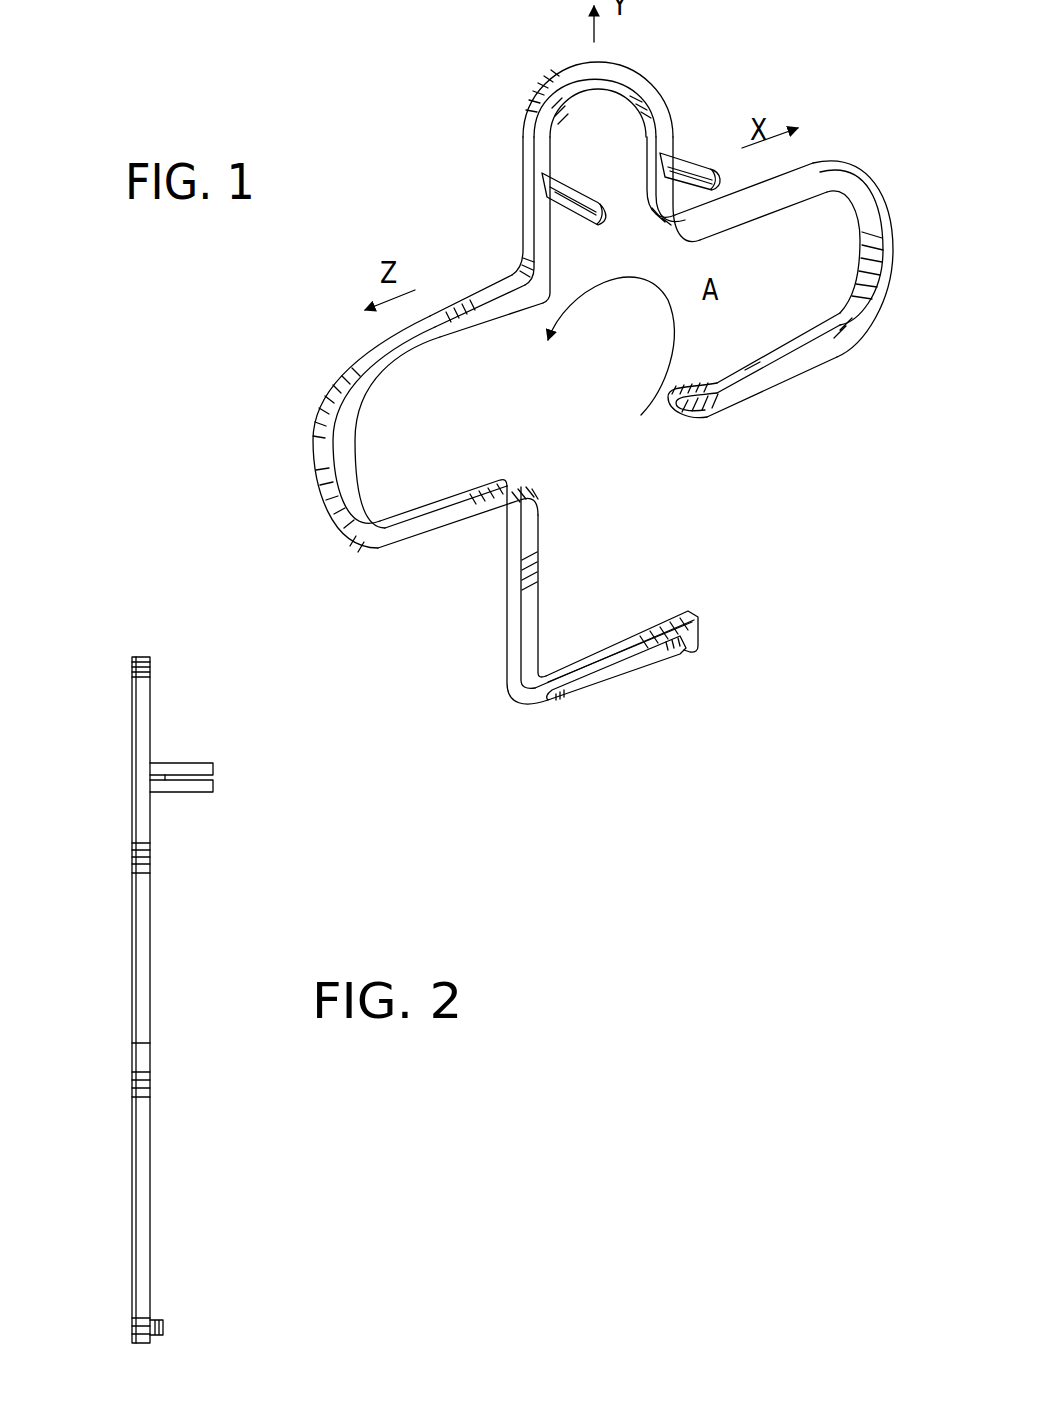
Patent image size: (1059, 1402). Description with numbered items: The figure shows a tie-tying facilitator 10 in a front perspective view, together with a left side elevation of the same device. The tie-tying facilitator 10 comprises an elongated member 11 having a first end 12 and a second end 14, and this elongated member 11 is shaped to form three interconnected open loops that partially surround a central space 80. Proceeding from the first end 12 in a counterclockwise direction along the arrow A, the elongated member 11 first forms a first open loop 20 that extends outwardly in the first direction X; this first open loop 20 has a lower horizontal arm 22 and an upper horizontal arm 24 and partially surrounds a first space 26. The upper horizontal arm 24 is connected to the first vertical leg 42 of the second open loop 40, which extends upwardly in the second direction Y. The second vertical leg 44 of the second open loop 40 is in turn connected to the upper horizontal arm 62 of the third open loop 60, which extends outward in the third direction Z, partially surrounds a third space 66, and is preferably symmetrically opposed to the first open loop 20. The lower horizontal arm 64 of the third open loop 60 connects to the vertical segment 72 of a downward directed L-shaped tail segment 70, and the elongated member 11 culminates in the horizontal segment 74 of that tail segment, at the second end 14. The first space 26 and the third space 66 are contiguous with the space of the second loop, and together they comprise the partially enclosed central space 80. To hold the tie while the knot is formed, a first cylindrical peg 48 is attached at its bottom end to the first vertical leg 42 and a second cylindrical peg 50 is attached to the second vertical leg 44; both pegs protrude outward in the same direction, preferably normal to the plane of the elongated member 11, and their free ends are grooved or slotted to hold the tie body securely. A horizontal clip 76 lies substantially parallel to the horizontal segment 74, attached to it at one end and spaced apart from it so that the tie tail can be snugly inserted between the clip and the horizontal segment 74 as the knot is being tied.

In FIG. 1, the tie-tying facilitator 10 is at (751, 428).
In FIG. 2, the tie-tying facilitator 10 is at (154, 1229).
In FIG. 1, the elongated member 11 is at (750, 360).
In FIG. 1, the first end 12 is at (675, 408).
In FIG. 1, the second end 14 is at (697, 626).
In FIG. 1, the first open loop 20 is at (858, 168).
In FIG. 1, the lower horizontal arm 22 is at (797, 372).
In FIG. 1, the upper horizontal arm 24 is at (762, 203).
In FIG. 1, the first space 26 is at (810, 300).
In FIG. 1, the second open loop 40 is at (526, 112).
In FIG. 2, the second open loop 40 is at (130, 706).
In FIG. 1, the first vertical leg 42 is at (640, 86).
In FIG. 1, the second vertical leg 44 is at (527, 232).
In FIG. 2, the second vertical leg 44 is at (138, 815).
In FIG. 1, the first cylindrical peg 48 is at (688, 163).
In FIG. 1, the second cylindrical peg 50 is at (545, 185).
In FIG. 2, the second cylindrical peg 50 is at (190, 762).
In FIG. 1, the third open loop 60 is at (350, 540).
In FIG. 2, the third open loop 60 is at (138, 1030).
In FIG. 1, the upper horizontal arm 62 is at (440, 336).
In FIG. 1, the lower horizontal arm 64 is at (436, 527).
In FIG. 1, the third space 66 is at (442, 458).
In FIG. 1, the L-shaped tail segment 70 is at (505, 689).
In FIG. 2, the L-shaped tail segment 70 is at (130, 1268).
In FIG. 1, the vertical segment 72 is at (540, 606).
In FIG. 2, the vertical segment 72 is at (140, 1208).
In FIG. 1, the horizontal segment 74 is at (645, 636).
In FIG. 1, the horizontal clip 76 is at (645, 665).
In FIG. 2, the horizontal clip 76 is at (165, 1325).
In FIG. 1, the central space 80 is at (618, 372).